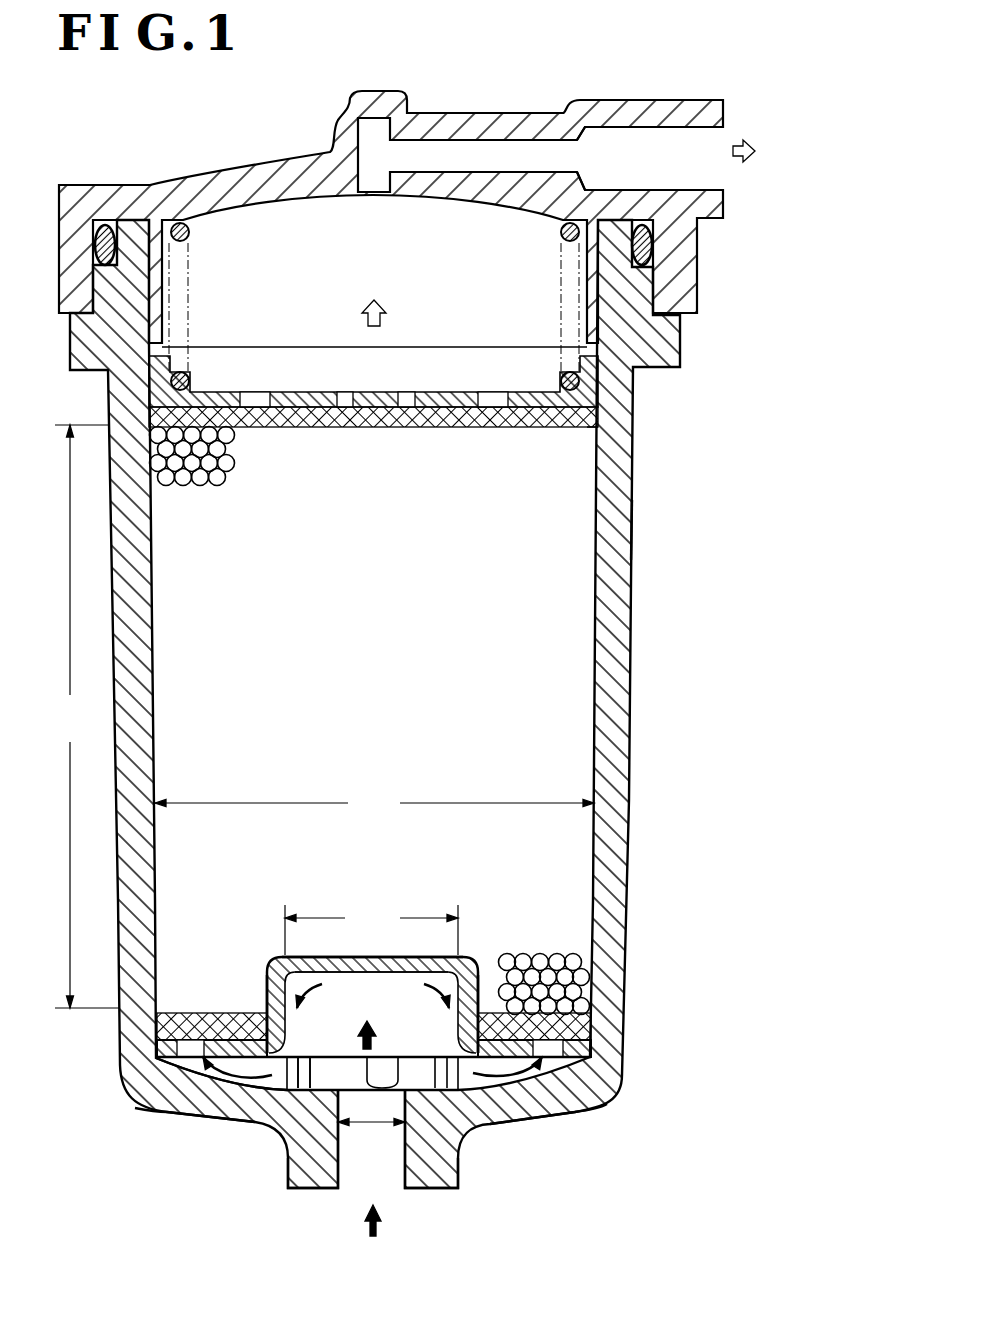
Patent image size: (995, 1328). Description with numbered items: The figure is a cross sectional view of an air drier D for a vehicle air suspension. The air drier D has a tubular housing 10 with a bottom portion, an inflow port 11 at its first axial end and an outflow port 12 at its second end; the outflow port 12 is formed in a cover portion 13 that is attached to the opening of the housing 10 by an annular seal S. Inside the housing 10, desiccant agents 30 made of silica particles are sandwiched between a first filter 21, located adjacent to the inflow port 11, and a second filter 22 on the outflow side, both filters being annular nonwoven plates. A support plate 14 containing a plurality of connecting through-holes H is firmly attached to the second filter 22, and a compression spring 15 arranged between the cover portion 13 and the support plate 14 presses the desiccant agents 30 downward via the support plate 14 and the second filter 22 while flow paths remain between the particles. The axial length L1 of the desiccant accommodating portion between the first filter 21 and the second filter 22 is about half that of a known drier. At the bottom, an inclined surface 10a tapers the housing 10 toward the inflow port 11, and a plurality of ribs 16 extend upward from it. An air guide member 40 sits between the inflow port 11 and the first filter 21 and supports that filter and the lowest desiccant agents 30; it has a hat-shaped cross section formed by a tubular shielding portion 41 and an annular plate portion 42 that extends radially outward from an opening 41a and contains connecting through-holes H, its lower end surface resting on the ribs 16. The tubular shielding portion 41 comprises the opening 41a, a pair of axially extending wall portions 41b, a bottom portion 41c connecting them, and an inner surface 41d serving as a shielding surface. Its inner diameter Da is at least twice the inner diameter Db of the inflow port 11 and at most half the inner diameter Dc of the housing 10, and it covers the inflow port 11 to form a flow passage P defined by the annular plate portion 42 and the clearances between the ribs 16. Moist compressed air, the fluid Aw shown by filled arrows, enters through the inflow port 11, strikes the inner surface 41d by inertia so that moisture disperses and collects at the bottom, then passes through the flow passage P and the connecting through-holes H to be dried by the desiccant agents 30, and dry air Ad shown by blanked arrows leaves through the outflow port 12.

The housing 10 is at (633, 672).
The inclined surface 10a is at (507, 1078).
The inflow port 11 is at (338, 1150).
The outflow port 12 is at (707, 128).
The cover portion 13 is at (673, 278).
The support plate 14 is at (585, 383).
The compression spring 15 is at (183, 225).
The ribs 16 is at (250, 1080).
The first filter 21 is at (567, 1028).
The second filter 22 is at (587, 415).
The desiccant agents 30 is at (557, 960).
The air guide member 40 is at (587, 1048).
The tubular shielding portion 41 is at (452, 1093).
The opening 41a is at (407, 1043).
The wall portions 41b is at (265, 992).
The bottom portion 41c is at (380, 958).
The inner surface 41d is at (373, 972).
The annular plate portion 42 is at (156, 1062).
The annular seal S is at (655, 242).
The connecting through-holes H is at (498, 412).
The air drier D is at (650, 580).
The flow passage P is at (292, 1062).
The axial length L1 is at (87, 716).
The inner diameter of the housing Dc is at (374, 807).
The inner diameter of the tubular shielding portion Da is at (371, 930).
The inner diameter of the inflow port Db is at (371, 1137).
The dry air Ad is at (765, 153).
The fluid Aw is at (373, 1237).